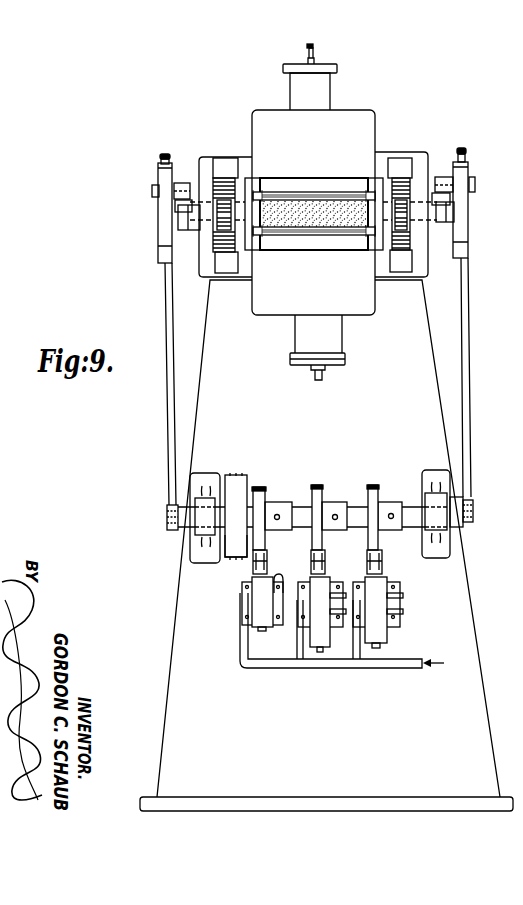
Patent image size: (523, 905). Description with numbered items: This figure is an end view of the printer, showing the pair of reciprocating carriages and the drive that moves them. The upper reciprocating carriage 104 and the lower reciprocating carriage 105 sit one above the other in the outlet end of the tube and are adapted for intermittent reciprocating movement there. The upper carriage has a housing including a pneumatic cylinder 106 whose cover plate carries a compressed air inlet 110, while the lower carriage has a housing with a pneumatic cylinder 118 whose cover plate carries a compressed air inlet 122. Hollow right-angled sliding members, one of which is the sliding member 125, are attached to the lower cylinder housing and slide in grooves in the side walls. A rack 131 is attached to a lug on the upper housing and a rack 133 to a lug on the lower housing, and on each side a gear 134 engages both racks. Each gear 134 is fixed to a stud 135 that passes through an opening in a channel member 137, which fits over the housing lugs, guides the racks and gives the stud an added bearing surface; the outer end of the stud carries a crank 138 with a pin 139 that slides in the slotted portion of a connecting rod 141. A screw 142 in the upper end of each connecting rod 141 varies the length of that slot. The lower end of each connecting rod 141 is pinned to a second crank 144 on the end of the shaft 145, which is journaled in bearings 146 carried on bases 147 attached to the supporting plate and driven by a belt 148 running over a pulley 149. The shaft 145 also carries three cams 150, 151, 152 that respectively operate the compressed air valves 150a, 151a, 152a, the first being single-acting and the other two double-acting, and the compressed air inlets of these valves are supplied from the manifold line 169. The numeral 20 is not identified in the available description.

The stand 20 is at (465, 723).
The upper reciprocating carriage 104 is at (277, 94).
The lower reciprocating carriage 105 is at (282, 324).
The pneumatic cylinder 106 is at (330, 82).
The compressed air inlet 110 is at (318, 53).
The pneumatic cylinder 118 is at (337, 340).
The compressed air inlet 122 is at (323, 375).
The sliding member 125 is at (327, 227).
The rack 131 is at (223, 163).
The rack 133 is at (228, 268).
The gear 134 is at (232, 192).
The stud 135 is at (178, 217).
The channel member 137 is at (203, 157).
The crank 138 is at (178, 203).
The pin 139 is at (153, 190).
The connecting rod 141 is at (167, 418).
The screw 142 is at (162, 158).
The second crank 144 is at (167, 512).
The shaft 145 is at (355, 507).
The bearing 146 is at (203, 534).
The base 147 is at (202, 476).
The belt 148 is at (233, 475).
The pulley 149 is at (232, 557).
The cam 150 is at (262, 487).
The cam 151 is at (317, 485).
The cam 152 is at (374, 486).
The compressed air valve 150a is at (260, 609).
The compressed air valve 151a is at (318, 639).
The compressed air valve 152a is at (381, 631).
The manifold line 169 is at (406, 666).